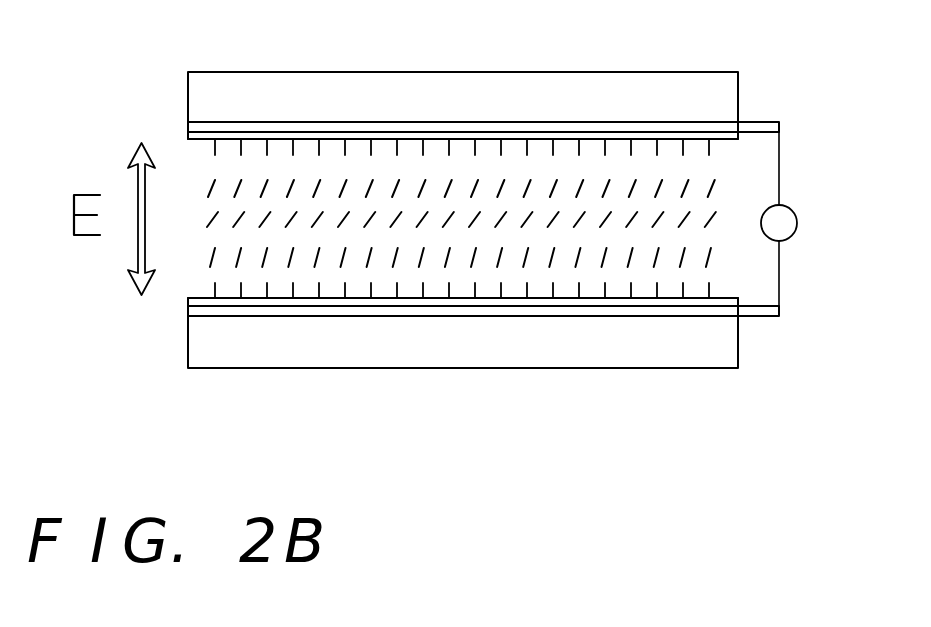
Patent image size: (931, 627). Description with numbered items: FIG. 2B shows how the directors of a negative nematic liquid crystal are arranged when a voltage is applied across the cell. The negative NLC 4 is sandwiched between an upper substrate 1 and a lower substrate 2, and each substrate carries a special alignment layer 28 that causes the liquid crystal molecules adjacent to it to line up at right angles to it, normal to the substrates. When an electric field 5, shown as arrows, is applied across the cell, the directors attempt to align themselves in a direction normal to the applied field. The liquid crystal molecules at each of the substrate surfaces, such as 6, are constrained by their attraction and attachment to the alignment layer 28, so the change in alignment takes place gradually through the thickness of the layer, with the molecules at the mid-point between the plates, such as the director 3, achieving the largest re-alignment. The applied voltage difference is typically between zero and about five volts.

The upper substrate 1 is at (718, 86).
The lower substrate 2 is at (688, 341).
The director 3 is at (625, 222).
The negative NLC 4 is at (267, 205).
The electric field 5 is at (145, 232).
The liquid crystal molecules at the substrate surfaces 6 is at (505, 142).
The alignment layer 28 is at (738, 133).